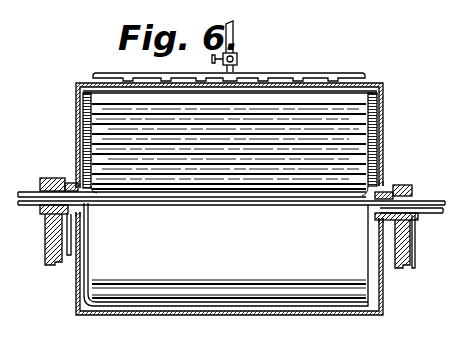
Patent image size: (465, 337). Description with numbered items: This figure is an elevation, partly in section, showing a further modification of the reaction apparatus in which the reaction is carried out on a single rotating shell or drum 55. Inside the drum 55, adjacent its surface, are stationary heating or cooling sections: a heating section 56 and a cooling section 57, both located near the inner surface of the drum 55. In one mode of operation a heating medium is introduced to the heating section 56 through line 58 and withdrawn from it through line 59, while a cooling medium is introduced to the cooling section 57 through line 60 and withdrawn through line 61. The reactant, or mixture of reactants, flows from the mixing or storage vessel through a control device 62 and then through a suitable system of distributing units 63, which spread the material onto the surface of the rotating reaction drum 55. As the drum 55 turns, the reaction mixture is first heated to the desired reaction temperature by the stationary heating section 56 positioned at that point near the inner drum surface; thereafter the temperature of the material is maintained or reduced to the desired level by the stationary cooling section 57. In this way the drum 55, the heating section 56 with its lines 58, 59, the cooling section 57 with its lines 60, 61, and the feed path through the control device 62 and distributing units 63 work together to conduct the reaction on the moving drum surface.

The rotating shell or drum 55 is at (382, 114).
The heating section 56 is at (368, 152).
The cooling section 57 is at (362, 276).
The line 58 is at (433, 201).
The line 59 is at (27, 192).
The line 60 is at (437, 213).
The line 61 is at (37, 205).
The control device 62 is at (238, 59).
The distributing units 63 is at (305, 73).